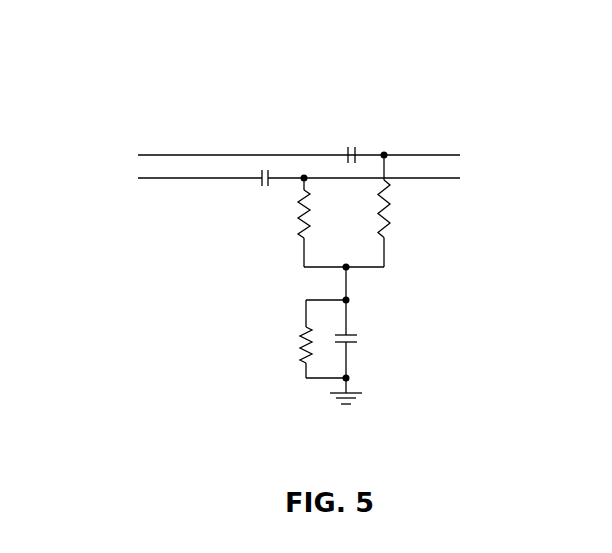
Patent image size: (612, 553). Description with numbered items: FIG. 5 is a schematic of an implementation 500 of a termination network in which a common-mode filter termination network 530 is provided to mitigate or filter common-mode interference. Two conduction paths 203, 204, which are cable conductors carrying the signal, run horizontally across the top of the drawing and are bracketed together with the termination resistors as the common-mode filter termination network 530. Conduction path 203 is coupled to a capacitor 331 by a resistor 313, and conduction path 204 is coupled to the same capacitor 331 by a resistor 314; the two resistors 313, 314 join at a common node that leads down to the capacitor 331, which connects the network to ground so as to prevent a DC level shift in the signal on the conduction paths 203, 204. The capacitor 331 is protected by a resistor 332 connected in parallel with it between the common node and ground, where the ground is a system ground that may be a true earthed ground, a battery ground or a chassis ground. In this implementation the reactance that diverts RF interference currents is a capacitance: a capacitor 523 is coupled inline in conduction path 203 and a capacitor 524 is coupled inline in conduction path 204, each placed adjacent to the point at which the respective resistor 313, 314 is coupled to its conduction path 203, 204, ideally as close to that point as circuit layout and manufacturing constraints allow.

The implementation of termination network 500 is at (160, 55).
The conduction path 203 is at (168, 155).
The conduction path 204 is at (168, 178).
The capacitor 523 is at (357, 150).
The capacitor 524 is at (272, 184).
The termination resistor 313 is at (393, 200).
The termination resistor 314 is at (312, 200).
The common-mode filter termination network 530 is at (419, 224).
The capacitor 331 is at (348, 335).
The resistor 332 is at (302, 355).